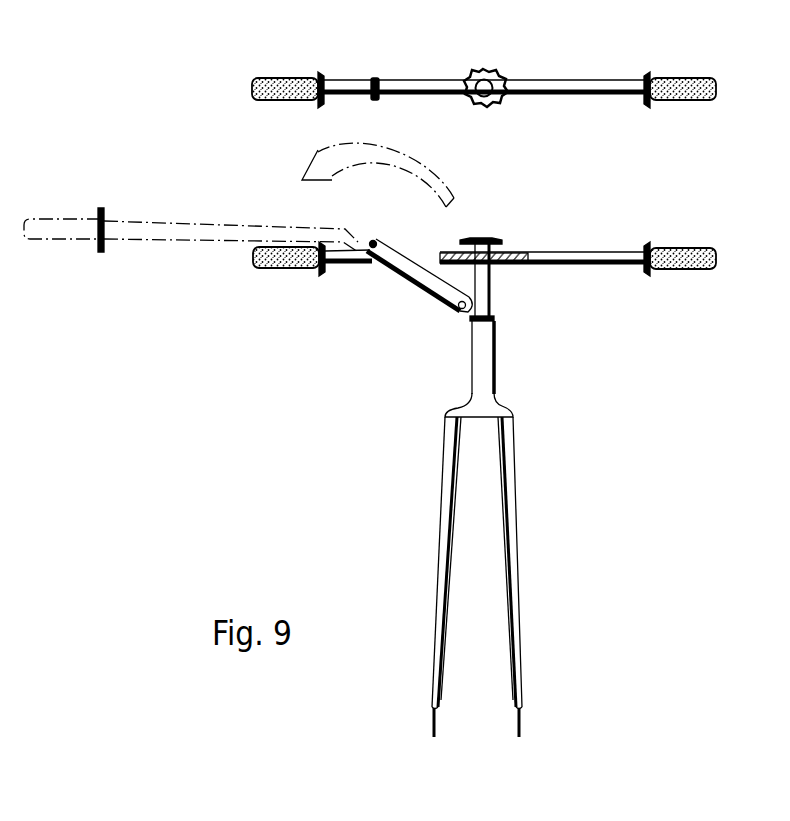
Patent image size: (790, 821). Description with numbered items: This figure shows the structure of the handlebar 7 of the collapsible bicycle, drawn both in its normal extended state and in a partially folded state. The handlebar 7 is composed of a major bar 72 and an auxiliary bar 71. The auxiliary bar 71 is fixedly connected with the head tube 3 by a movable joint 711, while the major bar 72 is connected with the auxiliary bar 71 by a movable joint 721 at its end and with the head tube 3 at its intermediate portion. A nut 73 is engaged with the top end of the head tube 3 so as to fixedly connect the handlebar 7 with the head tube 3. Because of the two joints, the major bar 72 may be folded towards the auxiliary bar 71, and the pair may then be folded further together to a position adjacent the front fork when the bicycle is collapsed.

The handlebar 7 is at (432, 62).
The auxiliary bar 71 is at (348, 97).
The major bar 72 is at (565, 85).
The nut 73 is at (484, 70).
The movable joint 721 is at (374, 78).
The movable joint 711 is at (458, 311).
The head tube 3 is at (497, 357).